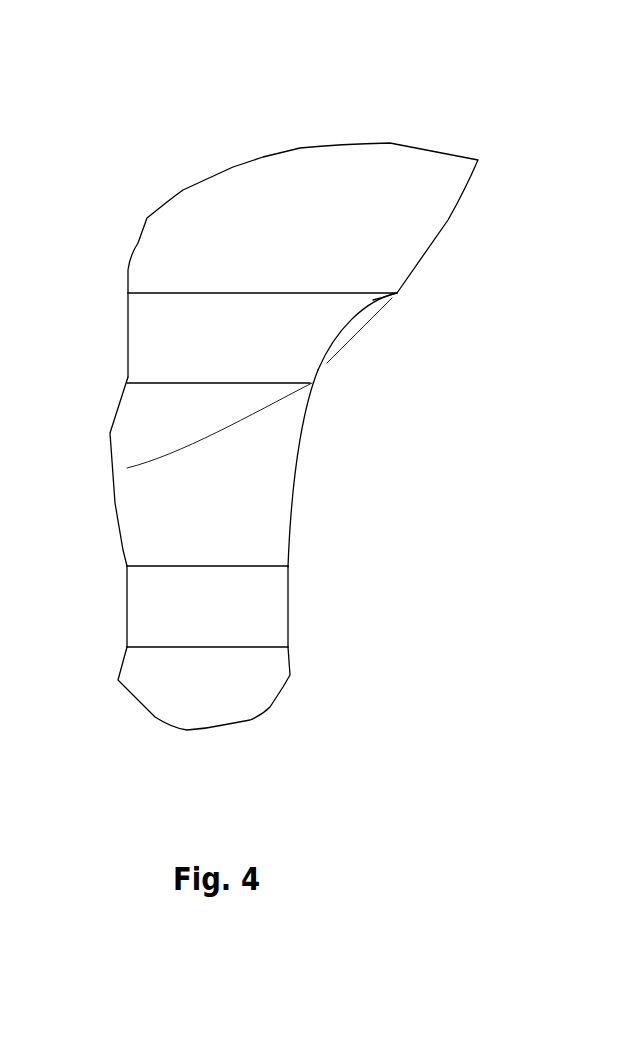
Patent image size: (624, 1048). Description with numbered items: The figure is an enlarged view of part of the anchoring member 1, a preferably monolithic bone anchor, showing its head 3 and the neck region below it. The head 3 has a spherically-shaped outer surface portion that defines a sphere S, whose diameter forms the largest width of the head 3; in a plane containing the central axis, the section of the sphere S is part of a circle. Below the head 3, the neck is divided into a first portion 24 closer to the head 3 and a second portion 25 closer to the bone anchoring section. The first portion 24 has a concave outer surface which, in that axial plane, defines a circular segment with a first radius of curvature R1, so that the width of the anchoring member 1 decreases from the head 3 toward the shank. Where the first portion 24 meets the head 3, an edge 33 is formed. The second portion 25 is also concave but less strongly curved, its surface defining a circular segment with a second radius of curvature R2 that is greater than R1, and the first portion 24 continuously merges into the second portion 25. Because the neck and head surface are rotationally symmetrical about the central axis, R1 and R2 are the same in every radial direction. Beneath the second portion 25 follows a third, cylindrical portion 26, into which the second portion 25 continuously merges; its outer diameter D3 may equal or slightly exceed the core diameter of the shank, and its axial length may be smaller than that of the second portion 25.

The anchoring member 1 is at (265, 381).
The head 3 is at (383, 183).
The first portion 24 is at (140, 332).
The second portion 25 is at (138, 530).
The third, cylindrical portion 26 is at (288, 620).
The edge 33 is at (397, 293).
The sphere S is at (155, 460).
The first radius of curvature R1 is at (295, 317).
The second radius of curvature R2 is at (525, 512).
The outer diameter of the third cylindrical portion D3 is at (47, 246).